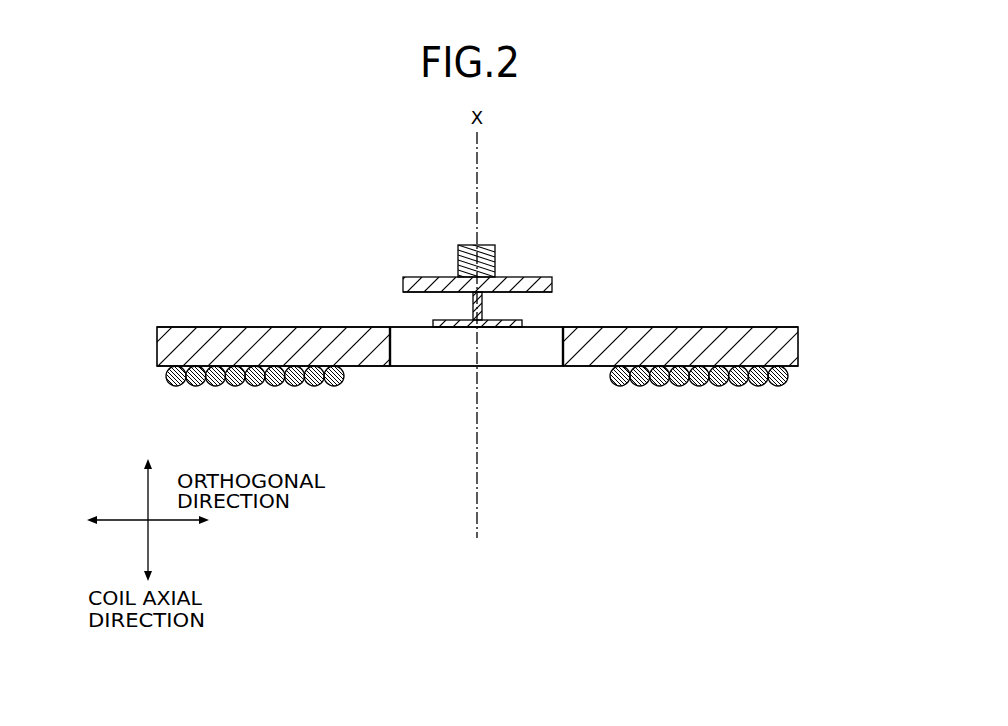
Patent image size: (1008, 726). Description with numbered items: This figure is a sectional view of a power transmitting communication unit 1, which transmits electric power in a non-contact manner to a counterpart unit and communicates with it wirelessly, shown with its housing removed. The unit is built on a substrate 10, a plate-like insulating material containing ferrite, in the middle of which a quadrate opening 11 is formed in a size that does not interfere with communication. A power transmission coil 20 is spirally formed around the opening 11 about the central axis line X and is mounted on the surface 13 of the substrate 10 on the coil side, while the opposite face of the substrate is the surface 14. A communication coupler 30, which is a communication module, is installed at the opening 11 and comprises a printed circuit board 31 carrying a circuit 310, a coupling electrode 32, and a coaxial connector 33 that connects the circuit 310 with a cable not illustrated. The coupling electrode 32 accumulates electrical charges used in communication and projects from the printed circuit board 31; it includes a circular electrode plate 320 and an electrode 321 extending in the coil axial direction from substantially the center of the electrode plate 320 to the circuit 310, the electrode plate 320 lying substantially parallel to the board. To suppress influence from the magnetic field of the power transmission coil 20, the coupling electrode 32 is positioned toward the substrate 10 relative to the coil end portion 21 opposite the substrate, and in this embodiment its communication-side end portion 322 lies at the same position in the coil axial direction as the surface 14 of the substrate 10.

The power transmitting communication unit 1 is at (652, 219).
The substrate 10 is at (157, 346).
The opening 11 is at (392, 352).
The surface 13 is at (162, 370).
The surface 14 is at (198, 327).
The power transmission coil 20 is at (260, 394).
The coil end portion 21 is at (760, 388).
The communication coupler 30 is at (529, 248).
The printed circuit board 31 is at (553, 280).
The circuit 310 is at (423, 292).
The coupling electrode 32 is at (448, 336).
The electrode plate 320 is at (447, 321).
The electrode 321 is at (483, 303).
The end portion 322 is at (508, 327).
The coaxial connector 33 is at (467, 243).